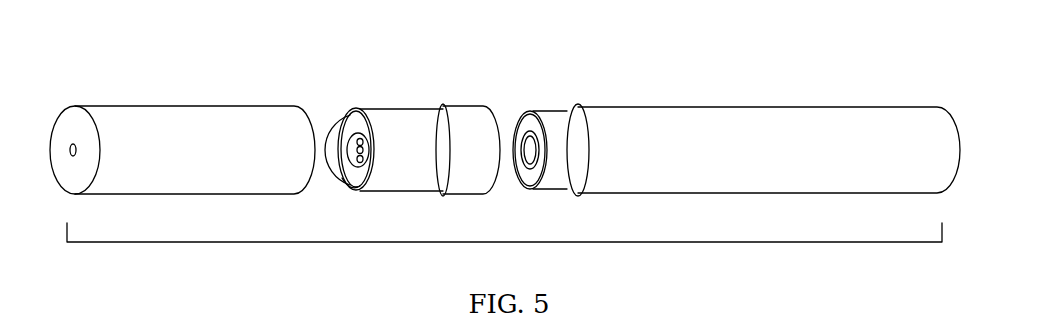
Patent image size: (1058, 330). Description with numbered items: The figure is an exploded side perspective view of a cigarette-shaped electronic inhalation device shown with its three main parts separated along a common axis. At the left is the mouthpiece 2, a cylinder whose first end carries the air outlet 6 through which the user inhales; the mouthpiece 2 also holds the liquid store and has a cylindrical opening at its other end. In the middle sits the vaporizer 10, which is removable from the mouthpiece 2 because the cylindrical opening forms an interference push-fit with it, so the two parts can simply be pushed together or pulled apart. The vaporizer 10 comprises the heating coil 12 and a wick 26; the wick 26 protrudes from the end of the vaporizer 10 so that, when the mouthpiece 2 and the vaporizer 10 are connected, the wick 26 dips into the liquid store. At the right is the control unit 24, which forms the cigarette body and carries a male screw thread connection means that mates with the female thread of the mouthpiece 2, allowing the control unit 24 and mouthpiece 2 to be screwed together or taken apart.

The mouthpiece 2 is at (206, 130).
The air outlet 6 is at (71, 148).
The vaporizer 10 is at (409, 125).
The heating coil 12 is at (357, 166).
The control unit 24 is at (752, 133).
The wick 26 is at (338, 137).